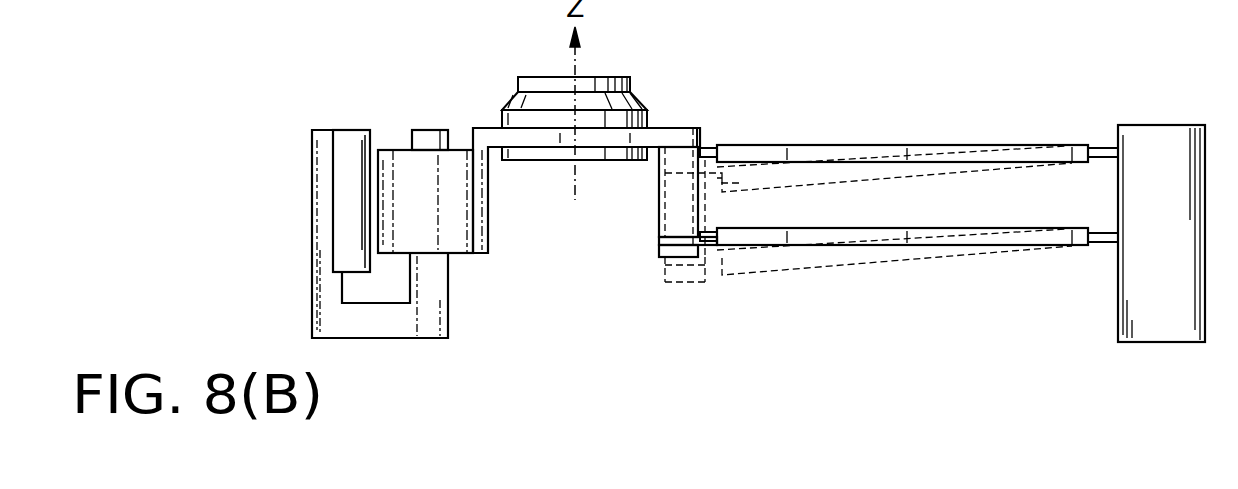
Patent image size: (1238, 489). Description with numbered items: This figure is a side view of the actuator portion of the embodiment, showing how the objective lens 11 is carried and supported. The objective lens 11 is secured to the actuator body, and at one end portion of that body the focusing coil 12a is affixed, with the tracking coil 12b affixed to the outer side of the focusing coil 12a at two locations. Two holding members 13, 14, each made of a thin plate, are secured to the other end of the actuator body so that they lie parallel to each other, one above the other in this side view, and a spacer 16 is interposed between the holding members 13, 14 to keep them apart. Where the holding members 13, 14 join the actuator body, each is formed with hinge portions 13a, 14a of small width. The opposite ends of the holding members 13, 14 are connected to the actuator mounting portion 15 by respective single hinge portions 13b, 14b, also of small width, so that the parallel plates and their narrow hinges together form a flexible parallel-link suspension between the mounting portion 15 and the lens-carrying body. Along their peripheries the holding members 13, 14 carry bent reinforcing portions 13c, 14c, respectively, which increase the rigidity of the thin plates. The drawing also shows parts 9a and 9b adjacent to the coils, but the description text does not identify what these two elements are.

The inner yoke 9a is at (356, 140).
The outer yoke 9b is at (322, 138).
The objective lens 11 is at (606, 80).
The focusing coil 12a is at (456, 250).
The tracking coil 12b is at (383, 152).
The holding member 13 is at (925, 145).
The hinge portions 13a is at (708, 142).
The hinge portion 13b is at (1106, 144).
The bent reinforcing portion 13c is at (853, 153).
The holding member 14 is at (955, 227).
The hinge portions 14a is at (714, 247).
The hinge portion 14b is at (1100, 250).
The bent reinforcing portion 14c is at (870, 235).
The actuator mounting portion 15 is at (1177, 130).
The spacer 16 is at (658, 192).